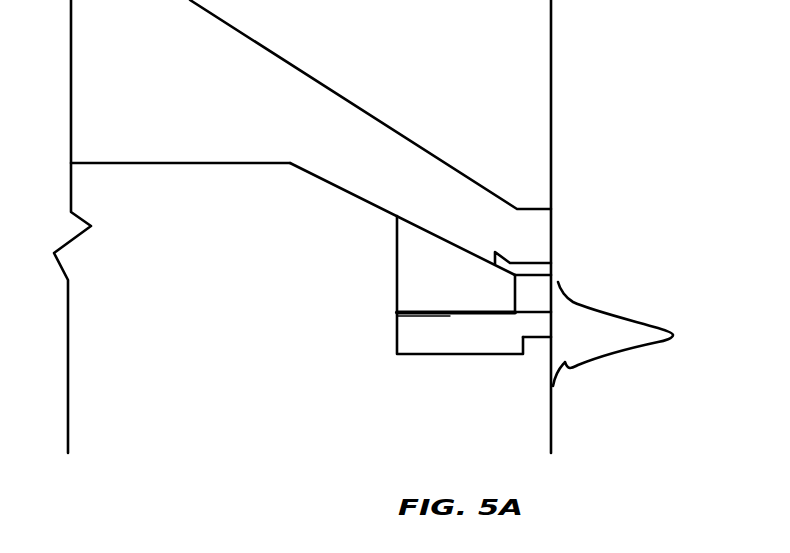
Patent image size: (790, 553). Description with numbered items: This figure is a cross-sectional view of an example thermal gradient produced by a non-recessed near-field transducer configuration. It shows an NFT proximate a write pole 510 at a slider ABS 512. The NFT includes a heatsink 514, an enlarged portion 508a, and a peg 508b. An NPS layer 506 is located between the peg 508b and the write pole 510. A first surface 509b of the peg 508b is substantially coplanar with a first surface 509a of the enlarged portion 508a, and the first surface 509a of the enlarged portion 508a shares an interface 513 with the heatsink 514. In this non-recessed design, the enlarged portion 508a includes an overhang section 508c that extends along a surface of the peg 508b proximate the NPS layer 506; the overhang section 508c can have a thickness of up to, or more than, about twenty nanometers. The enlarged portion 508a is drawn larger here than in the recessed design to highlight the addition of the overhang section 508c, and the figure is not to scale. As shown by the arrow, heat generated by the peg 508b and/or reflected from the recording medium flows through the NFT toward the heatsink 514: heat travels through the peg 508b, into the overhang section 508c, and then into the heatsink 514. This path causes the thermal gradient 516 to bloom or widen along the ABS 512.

The slider ABS 512 is at (555, 0).
The write pole 510 is at (535, 220).
The heatsink 514 is at (408, 260).
The interface 513 is at (463, 310).
The first surface of the peg 509b is at (522, 310).
The NPS layer 506 is at (543, 305).
The enlarged portion 508a is at (407, 324).
The first surface of the enlarged portion 509a is at (450, 316).
The overhang section 508c is at (523, 319).
The peg 508b is at (537, 337).
The thermal gradient 516 is at (646, 320).